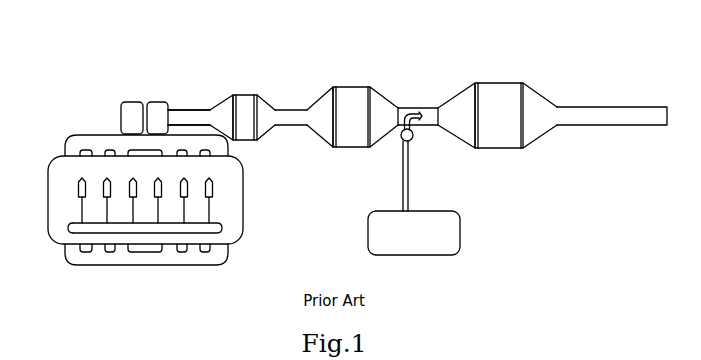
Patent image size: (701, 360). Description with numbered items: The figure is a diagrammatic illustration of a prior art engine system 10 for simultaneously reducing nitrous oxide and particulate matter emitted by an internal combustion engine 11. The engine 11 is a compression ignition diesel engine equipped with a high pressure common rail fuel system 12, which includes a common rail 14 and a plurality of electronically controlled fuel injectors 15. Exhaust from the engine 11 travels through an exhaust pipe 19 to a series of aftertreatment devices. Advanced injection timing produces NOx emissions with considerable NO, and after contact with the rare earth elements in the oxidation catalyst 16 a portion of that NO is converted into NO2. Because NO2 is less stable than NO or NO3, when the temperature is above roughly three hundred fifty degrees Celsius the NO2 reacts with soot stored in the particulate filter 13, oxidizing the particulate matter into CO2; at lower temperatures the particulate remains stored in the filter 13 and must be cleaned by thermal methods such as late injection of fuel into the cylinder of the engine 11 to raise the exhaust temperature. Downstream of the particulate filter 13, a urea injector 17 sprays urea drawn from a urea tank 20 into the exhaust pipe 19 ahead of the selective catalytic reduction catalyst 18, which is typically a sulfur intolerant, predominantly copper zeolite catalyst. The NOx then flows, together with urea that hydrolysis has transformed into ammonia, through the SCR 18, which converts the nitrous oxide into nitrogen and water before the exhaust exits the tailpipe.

The engine system 10 is at (430, 46).
The internal combustion engine 11 is at (236, 252).
The common rail fuel system 12 is at (66, 238).
The particulate filter 13 is at (354, 82).
The common rail 14 is at (68, 227).
The fuel injectors 15 is at (78, 185).
The oxidation catalyst 16 is at (249, 92).
The urea injector 17 is at (416, 148).
The selective catalytic reduction catalyst 18 is at (509, 80).
The exhaust pipe 19 is at (187, 103).
The urea tank 20 is at (416, 266).